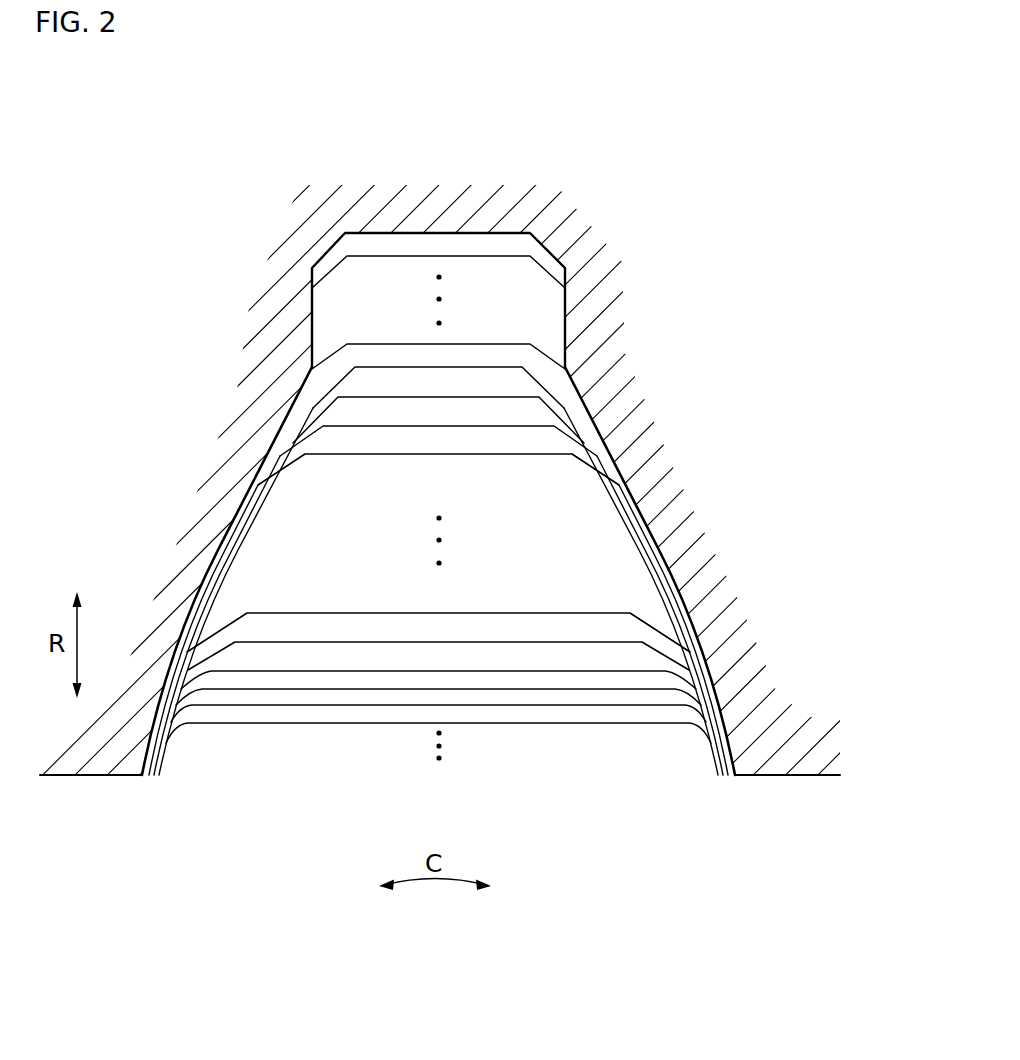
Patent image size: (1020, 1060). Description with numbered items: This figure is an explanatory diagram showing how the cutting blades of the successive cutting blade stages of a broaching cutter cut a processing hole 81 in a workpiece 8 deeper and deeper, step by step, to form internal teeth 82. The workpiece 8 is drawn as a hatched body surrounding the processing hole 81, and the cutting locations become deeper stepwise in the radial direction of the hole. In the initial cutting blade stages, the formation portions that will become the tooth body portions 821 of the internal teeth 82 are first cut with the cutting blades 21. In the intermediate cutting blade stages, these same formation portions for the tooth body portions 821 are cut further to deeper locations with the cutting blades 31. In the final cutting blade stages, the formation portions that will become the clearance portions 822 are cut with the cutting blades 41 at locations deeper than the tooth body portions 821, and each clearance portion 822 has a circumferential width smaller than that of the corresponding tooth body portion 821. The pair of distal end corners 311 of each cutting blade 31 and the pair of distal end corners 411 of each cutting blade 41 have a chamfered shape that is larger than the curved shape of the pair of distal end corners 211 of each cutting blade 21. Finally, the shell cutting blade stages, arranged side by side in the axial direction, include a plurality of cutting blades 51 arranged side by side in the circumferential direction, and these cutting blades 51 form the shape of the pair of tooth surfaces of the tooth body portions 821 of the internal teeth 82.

The workpiece 8 is at (628, 182).
The processing hole 81 is at (767, 788).
The internal teeth 82 is at (703, 576).
The tooth body portion 821 is at (635, 505).
The clearance portion 822 is at (565, 306).
The cutting blade 41 is at (345, 290).
The distal end corner 411 is at (545, 252).
The cutting blade 31 is at (324, 444).
The distal end corner 311 is at (600, 462).
The cutting blade 51 is at (220, 548).
The cutting blade 21 is at (250, 698).
The distal end corner 211 is at (690, 690).